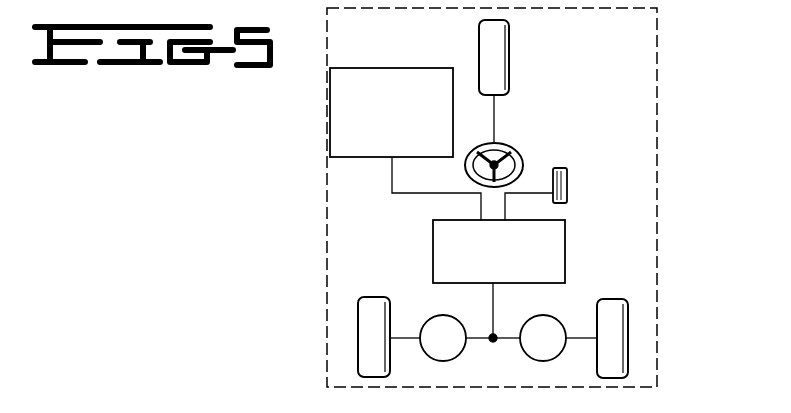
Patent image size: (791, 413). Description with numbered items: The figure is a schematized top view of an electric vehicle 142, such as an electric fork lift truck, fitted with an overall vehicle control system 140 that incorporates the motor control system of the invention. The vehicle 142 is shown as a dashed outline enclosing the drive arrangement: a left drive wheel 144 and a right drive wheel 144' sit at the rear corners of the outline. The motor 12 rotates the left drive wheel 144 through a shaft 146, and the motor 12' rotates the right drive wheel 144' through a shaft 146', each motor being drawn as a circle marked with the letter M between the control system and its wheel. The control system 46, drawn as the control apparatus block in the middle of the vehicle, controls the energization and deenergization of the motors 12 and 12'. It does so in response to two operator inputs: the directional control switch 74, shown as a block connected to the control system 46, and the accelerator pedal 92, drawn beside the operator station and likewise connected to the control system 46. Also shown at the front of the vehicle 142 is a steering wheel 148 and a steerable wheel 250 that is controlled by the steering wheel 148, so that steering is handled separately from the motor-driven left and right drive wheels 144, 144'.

The electric vehicle 142 is at (658, 142).
The directional control switch 74 is at (392, 68).
The steerable wheel 250 is at (509, 38).
The steering wheel 148 is at (506, 143).
The overall vehicle control system 140 is at (548, 158).
The accelerator pedal 92 is at (567, 173).
The control system 46 is at (433, 228).
The motor 12' is at (455, 324).
The motor 12 is at (531, 324).
The shaft 146' is at (393, 302).
The shaft 146 is at (603, 296).
The right drive wheel 144' is at (321, 337).
The left drive wheel 144 is at (662, 338).